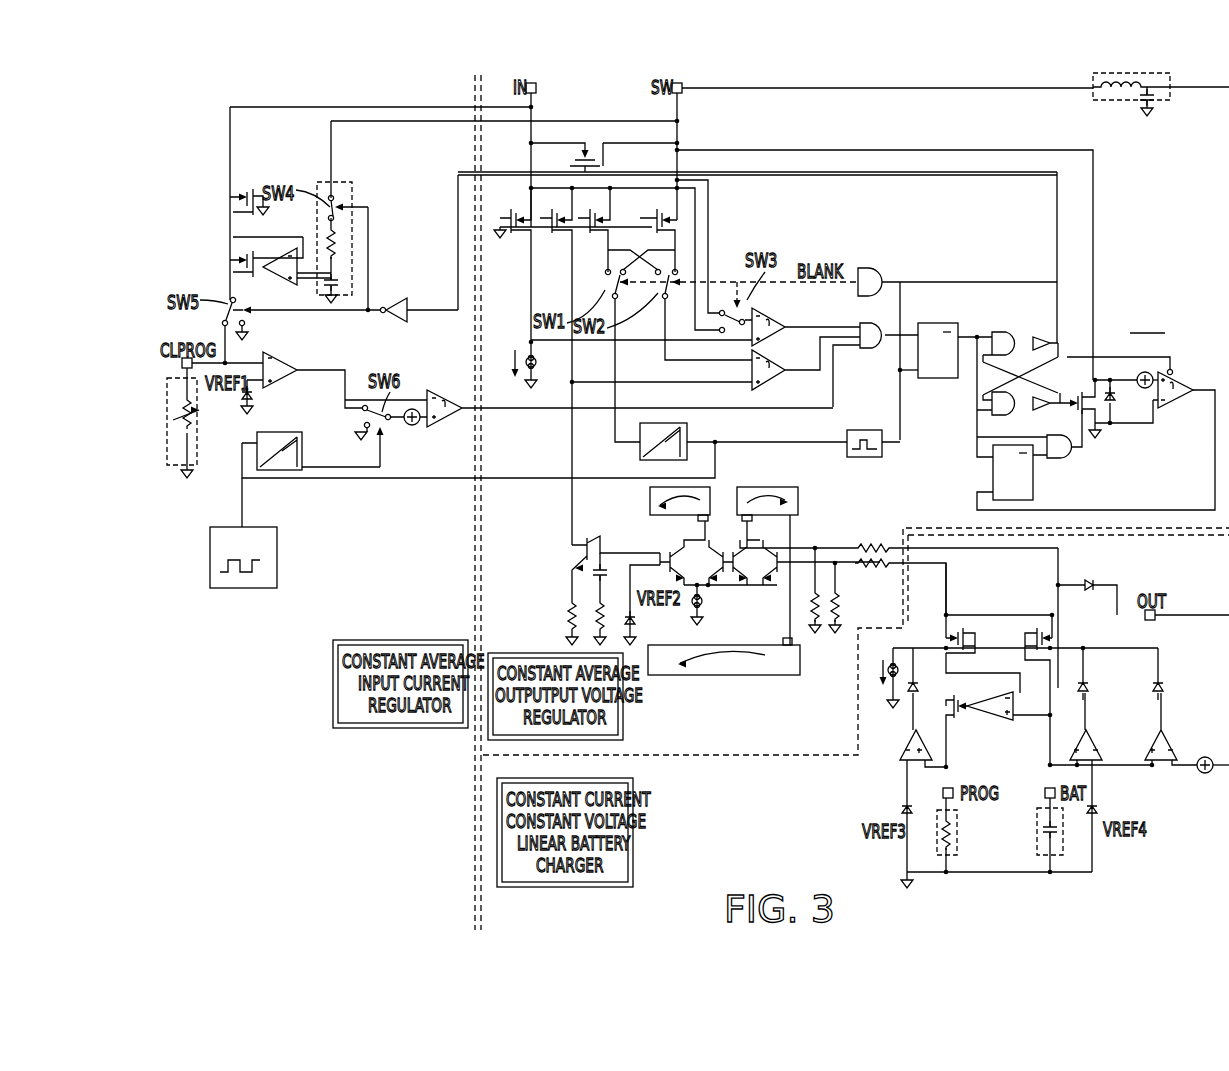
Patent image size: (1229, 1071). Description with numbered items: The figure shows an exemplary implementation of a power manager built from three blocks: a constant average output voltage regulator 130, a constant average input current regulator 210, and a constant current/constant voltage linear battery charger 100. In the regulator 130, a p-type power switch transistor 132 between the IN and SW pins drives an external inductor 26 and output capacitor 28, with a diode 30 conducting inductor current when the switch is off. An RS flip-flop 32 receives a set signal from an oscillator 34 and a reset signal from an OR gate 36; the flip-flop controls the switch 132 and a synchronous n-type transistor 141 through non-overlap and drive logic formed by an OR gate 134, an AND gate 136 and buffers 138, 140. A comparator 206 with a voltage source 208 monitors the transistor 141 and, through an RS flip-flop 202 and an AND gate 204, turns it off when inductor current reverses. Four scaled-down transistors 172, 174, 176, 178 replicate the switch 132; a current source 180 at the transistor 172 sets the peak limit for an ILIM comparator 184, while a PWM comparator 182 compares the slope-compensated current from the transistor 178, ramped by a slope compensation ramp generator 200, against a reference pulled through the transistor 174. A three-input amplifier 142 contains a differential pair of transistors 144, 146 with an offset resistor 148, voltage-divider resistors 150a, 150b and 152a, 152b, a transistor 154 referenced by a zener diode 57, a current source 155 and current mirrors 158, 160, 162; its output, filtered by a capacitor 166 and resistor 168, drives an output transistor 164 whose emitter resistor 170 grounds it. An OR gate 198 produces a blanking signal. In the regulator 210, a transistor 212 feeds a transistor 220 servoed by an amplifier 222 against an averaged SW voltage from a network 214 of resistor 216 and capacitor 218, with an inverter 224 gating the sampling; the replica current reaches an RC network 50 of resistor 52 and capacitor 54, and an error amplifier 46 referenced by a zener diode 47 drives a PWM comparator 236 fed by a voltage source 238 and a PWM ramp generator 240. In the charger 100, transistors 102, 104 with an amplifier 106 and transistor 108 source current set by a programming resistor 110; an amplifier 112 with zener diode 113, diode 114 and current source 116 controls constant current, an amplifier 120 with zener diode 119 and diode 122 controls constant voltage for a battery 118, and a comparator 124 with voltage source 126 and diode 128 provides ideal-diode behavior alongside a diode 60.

The inductor 26 is at (1120, 95).
The output capacitor 28 is at (1160, 108).
The diode 30 is at (1115, 415).
The RS flip-flop 32 is at (928, 380).
The oscillator 34 is at (243, 585).
The OR gate 36 is at (880, 350).
The error amplifier 46 is at (285, 357).
The zener diode 47 is at (243, 400).
The RC network 50 is at (167, 392).
The resistor 52 is at (183, 435).
The averaging capacitor 54 is at (173, 422).
The zener diode 57 is at (605, 608).
The diode 60 is at (1090, 580).
The constant current/constant voltage linear battery charger 100 is at (821, 858).
The p-type MOS transistor 102 is at (965, 632).
The p-type MOS transistor 104 is at (1037, 632).
The amplifier 106 is at (1007, 722).
The p-type MOS transistor 108 is at (965, 722).
The programming resistor 110 is at (950, 830).
The amplifier 112 is at (900, 745).
The zener diode 113 is at (903, 810).
The diode 114 is at (915, 695).
The current source 116 is at (895, 655).
The battery 118 is at (1060, 832).
The zener diode 119 is at (1095, 808).
The amplifier 120 is at (1098, 740).
The diode 122 is at (1090, 688).
The comparator 124 is at (1173, 740).
The voltage source 126 is at (1207, 775).
The diode 128 is at (1165, 688).
The constant average output voltage regulator 130 is at (1168, 237).
The p-type MOS power switch transistor 132 is at (598, 145).
The OR gate 134 is at (1000, 333).
The AND gate 136 is at (990, 405).
The buffer 138 is at (1047, 340).
The buffer 140 is at (990, 430).
The n-type MOS transistor 141 is at (1085, 395).
The three-input amplifier 142 is at (737, 640).
The transistor 144 is at (795, 545).
The transistor 146 is at (702, 548).
The resistor 148 is at (738, 588).
The resistor 150a is at (862, 542).
The resistor 150b is at (838, 612).
The resistor 152a is at (878, 565).
The resistor 152b is at (872, 548).
The transistor 154 is at (668, 552).
The current source 155 is at (692, 610).
The current mirror 158 is at (798, 495).
The current mirror 160 is at (650, 505).
The current mirror 162 is at (755, 670).
The output transistor 164 is at (583, 550).
The capacitor 166 is at (585, 560).
The resistor 168 is at (570, 612).
The resistor 170 is at (592, 610).
The p-type MOS transistor 172 is at (527, 248).
The p-type MOS transistor 174 is at (566, 248).
The p-type MOS transistor 176 is at (604, 248).
The p-type MOS transistor 178 is at (668, 232).
The current source 180 is at (515, 390).
The PWM comparator 182 is at (772, 383).
The ILIM comparator 184 is at (772, 345).
The OR gate 198 is at (880, 270).
The slope compensation ramp generator 200 is at (688, 437).
The RS flip-flop 202 is at (1035, 495).
The AND gate 204 is at (1075, 455).
The comparator 206 is at (1172, 405).
The voltage source 208 is at (1160, 372).
The constant average input current regulator 210 is at (368, 593).
The p-type MOS transistor 212 is at (225, 199).
The resistor-capacitor-switch network 214 is at (355, 190).
The resistor 216 is at (334, 248).
The capacitor 218 is at (343, 283).
The p-type MOS transistor 220 is at (228, 262).
The amplifier 222 is at (296, 272).
The inverter 224 is at (405, 318).
The PWM comparator 236 is at (450, 425).
The voltage source 238 is at (412, 428).
The PWM ramp generator 240 is at (299, 465).